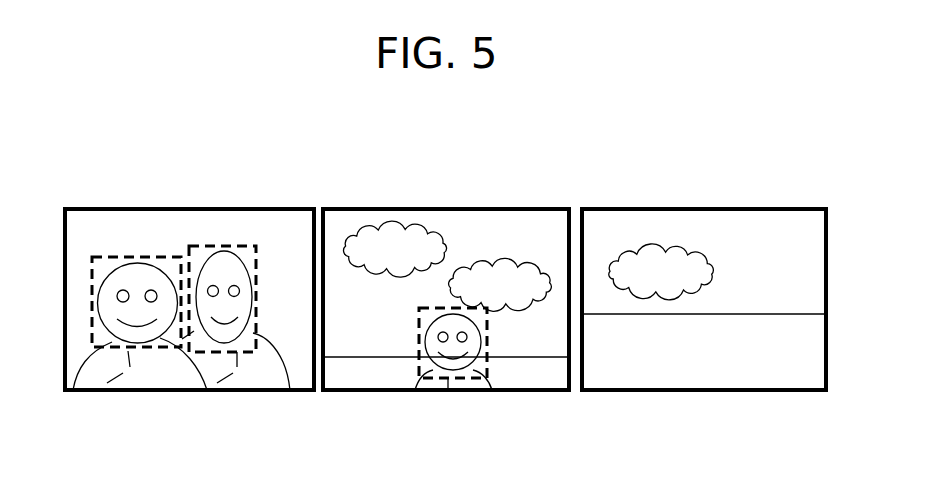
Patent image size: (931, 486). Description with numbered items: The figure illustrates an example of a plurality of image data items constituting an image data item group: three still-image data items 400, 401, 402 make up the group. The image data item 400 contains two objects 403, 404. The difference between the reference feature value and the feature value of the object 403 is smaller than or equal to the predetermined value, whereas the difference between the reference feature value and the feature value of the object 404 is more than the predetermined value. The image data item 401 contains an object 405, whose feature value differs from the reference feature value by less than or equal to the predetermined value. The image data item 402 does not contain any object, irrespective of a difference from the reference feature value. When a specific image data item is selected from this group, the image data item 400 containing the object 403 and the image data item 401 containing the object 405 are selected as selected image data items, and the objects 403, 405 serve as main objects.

The image data item 400 is at (103, 205).
The image data item 401 is at (360, 205).
The image data item 402 is at (612, 205).
The object 403 is at (100, 393).
The object 404 is at (207, 393).
The object 405 is at (434, 398).